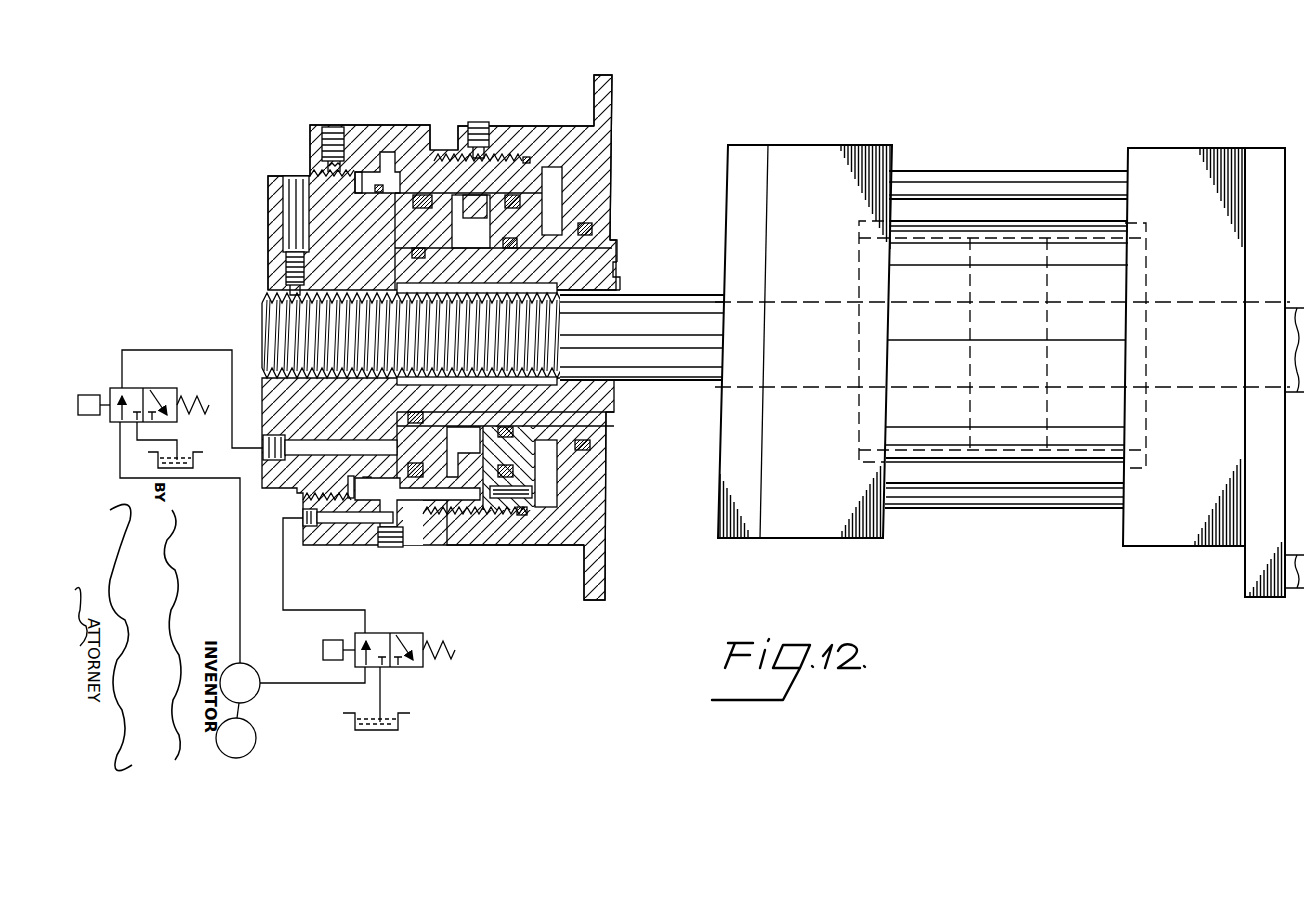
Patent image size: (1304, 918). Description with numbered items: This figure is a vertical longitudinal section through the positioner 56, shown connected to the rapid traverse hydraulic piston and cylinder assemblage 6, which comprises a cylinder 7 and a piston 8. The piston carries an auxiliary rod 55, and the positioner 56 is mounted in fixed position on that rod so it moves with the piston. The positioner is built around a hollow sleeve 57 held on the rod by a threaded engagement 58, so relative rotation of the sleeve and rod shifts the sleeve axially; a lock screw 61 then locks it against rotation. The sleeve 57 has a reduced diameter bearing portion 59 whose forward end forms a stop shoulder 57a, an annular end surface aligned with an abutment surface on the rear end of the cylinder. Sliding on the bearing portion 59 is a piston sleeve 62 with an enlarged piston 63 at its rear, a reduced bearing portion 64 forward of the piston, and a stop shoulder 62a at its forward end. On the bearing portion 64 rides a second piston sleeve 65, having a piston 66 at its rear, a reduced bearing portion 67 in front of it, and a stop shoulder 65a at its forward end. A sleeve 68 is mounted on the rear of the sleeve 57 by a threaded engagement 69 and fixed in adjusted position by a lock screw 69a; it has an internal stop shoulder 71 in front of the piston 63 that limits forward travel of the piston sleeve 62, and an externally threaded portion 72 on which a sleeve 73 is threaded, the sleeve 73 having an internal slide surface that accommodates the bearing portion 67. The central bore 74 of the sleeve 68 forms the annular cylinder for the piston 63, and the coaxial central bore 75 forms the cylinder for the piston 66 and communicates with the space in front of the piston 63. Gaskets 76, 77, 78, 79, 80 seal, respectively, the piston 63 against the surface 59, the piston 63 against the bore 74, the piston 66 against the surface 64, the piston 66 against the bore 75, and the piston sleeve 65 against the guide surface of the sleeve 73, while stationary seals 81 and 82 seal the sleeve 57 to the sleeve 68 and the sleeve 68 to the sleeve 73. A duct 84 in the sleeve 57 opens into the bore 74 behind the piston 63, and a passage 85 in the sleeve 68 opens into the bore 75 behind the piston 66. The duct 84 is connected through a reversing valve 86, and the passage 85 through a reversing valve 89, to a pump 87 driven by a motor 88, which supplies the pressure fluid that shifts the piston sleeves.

The hydraulic piston and cylinder assemblage 6 is at (871, 142).
The cylinder 7 is at (1078, 468).
The piston 8 is at (967, 433).
The auxiliary rod 55 is at (708, 337).
The positioner 56 is at (612, 100).
The hollow sleeve 57 is at (268, 207).
The stop shoulder 57a is at (620, 273).
The threaded engagement 58 is at (263, 294).
The bearing portion 59 is at (604, 403).
The lock screw 61 is at (283, 257).
The piston sleeve 62 is at (440, 186).
The stop shoulder 62a is at (616, 262).
The piston 63 is at (440, 478).
The bearing portion 64 is at (605, 416).
The piston sleeve 65 is at (608, 213).
The stop shoulder 65a is at (612, 243).
The piston 66 is at (608, 197).
The bearing portion 67 is at (604, 430).
The sleeve 68 is at (317, 130).
The threaded engagement 69 is at (320, 175).
The lock screw 69a is at (315, 146).
The internal stop shoulder 71 is at (471, 221).
The externally threaded portion 72 is at (450, 152).
The sleeve 73 is at (606, 532).
The central bore 74 is at (387, 187).
The central bore 75 is at (543, 499).
The gasket 76 is at (405, 267).
The gasket 77 is at (410, 195).
The gasket 78 is at (530, 450).
The gasket 79 is at (520, 154).
The gasket 80 is at (560, 445).
The stationary seal 81 is at (373, 183).
The stationary seal 82 is at (527, 155).
The duct 84 is at (313, 452).
The passage 85 is at (343, 524).
The reversing valve 86 is at (167, 418).
The pump 87 is at (247, 665).
The motor 88 is at (256, 745).
The reversing valve 89 is at (405, 668).